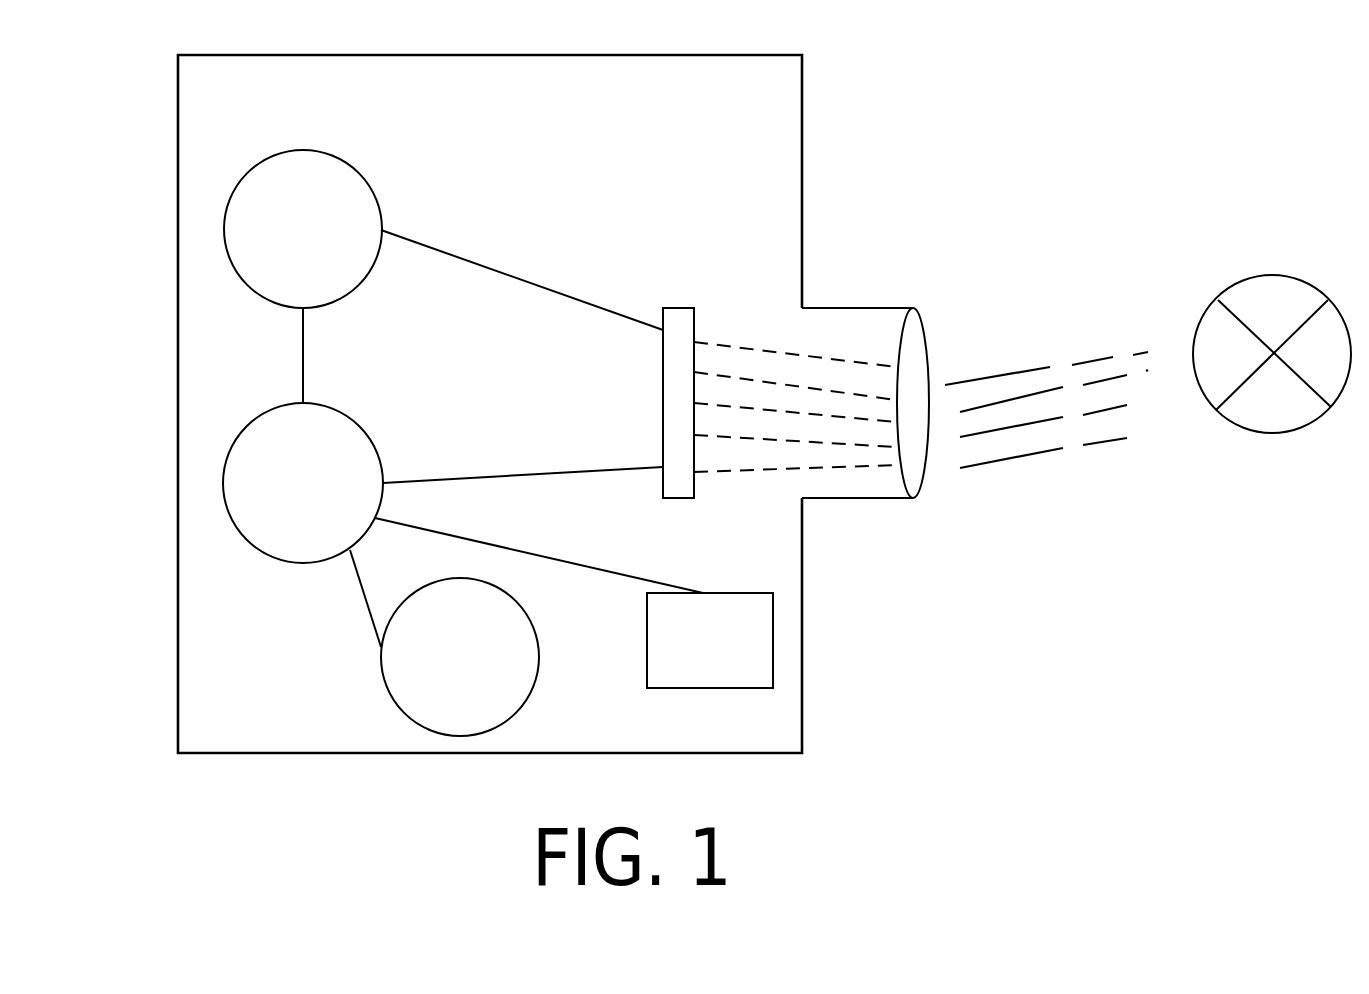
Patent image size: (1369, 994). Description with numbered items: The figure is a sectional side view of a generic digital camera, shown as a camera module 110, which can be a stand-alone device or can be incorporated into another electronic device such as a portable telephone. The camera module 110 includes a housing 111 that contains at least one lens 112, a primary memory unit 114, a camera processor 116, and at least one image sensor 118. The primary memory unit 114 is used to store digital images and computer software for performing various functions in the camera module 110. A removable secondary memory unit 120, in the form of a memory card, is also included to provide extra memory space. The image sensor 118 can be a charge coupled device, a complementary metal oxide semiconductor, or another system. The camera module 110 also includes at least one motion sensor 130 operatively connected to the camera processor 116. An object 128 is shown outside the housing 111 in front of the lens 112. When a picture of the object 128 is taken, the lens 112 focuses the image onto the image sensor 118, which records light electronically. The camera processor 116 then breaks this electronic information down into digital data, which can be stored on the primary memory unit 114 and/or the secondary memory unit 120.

The camera module 110 is at (115, 757).
The housing 111 is at (178, 575).
The lens 112 is at (930, 347).
The primary memory unit 114 is at (378, 207).
The camera processor 116 is at (223, 483).
The image sensor 118 is at (697, 332).
The secondary memory unit 120 is at (460, 737).
The object 128 is at (1273, 433).
The motion sensor 130 is at (773, 640).